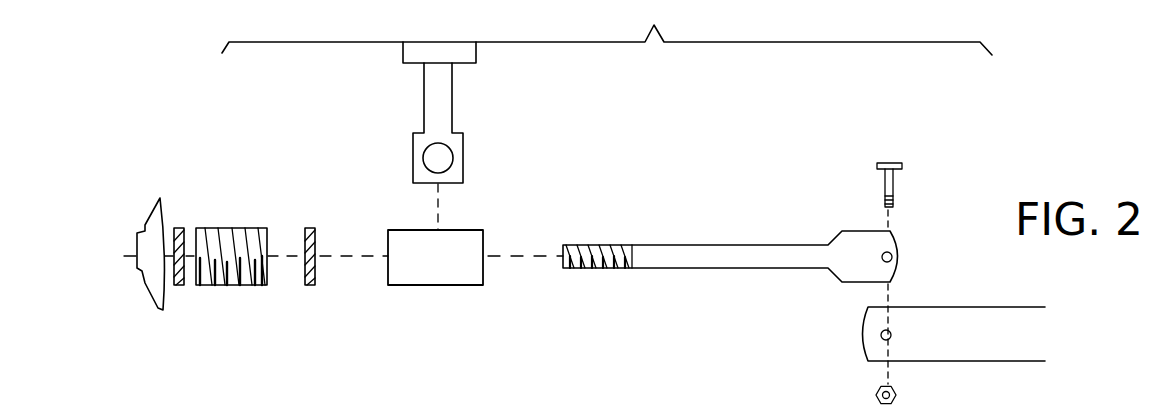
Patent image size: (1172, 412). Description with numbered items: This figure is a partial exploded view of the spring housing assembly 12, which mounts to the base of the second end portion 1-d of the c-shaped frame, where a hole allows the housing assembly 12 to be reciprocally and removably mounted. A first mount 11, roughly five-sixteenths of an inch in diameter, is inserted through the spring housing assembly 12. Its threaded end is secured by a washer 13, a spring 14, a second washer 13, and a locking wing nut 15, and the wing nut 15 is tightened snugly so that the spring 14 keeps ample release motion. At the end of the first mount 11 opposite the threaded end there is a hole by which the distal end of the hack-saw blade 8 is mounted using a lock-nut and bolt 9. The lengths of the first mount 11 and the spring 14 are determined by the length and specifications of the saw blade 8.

The second end portion 1-d is at (443, 102).
The hack-saw blade 8 is at (1000, 349).
The lock-nut and bolt 9 is at (896, 189).
The first mount 11 is at (863, 270).
The spring housing assembly 12 is at (452, 272).
The washer 13 is at (178, 227).
The spring 14 is at (238, 227).
The locking wing nut 15 is at (153, 210).